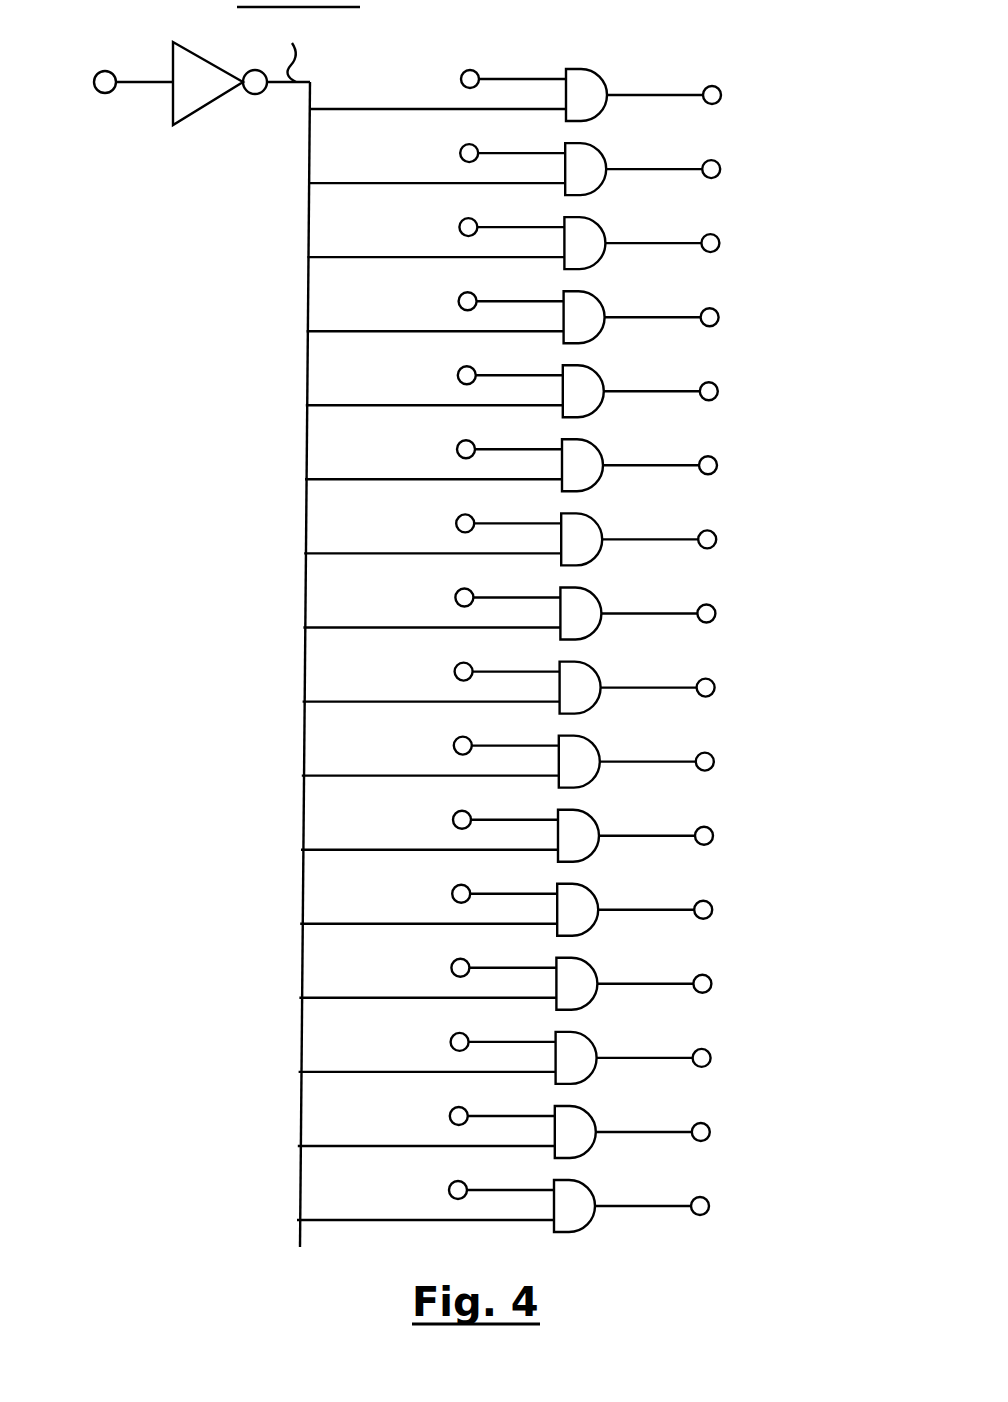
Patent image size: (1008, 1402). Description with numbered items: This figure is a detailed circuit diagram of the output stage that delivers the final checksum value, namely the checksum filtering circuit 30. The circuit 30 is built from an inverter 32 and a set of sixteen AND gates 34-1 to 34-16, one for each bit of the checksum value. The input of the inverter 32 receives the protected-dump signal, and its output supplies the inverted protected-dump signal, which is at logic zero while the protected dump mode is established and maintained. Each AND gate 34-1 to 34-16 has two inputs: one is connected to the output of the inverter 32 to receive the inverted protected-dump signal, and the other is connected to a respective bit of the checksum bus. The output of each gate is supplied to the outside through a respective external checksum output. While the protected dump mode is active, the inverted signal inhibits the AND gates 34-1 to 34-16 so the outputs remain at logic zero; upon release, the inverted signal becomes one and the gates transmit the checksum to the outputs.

The checksum filtering circuit 30 is at (232, 1059).
The inverter 32 is at (203, 104).
The AND gate 34-1 is at (616, 73).
The AND gate 34-16 is at (612, 1226).